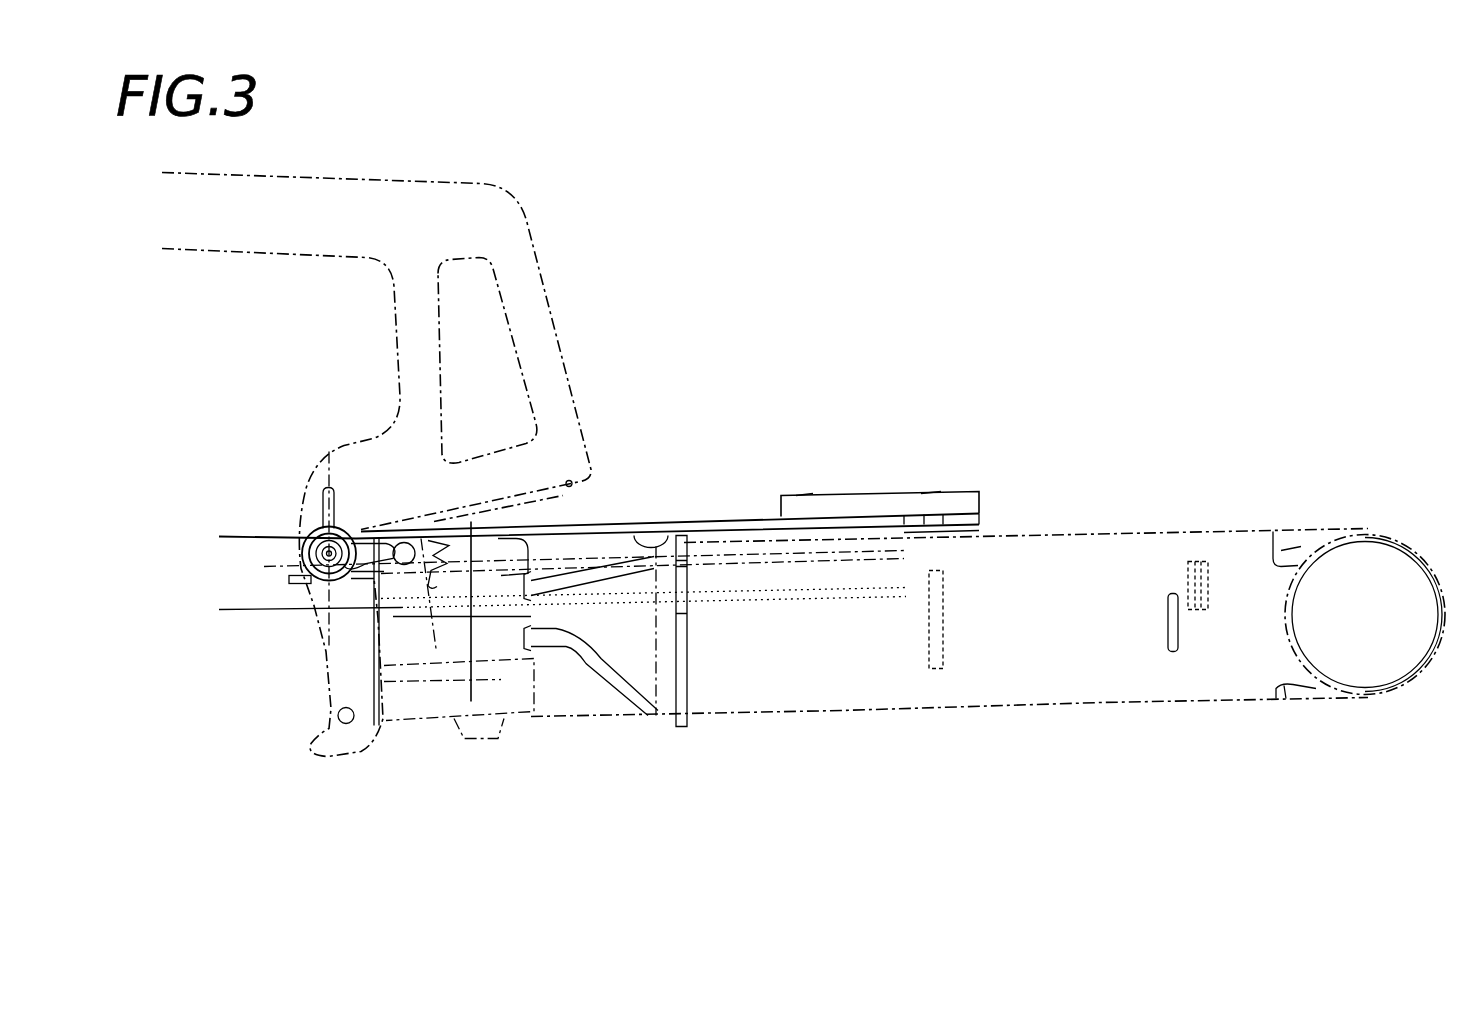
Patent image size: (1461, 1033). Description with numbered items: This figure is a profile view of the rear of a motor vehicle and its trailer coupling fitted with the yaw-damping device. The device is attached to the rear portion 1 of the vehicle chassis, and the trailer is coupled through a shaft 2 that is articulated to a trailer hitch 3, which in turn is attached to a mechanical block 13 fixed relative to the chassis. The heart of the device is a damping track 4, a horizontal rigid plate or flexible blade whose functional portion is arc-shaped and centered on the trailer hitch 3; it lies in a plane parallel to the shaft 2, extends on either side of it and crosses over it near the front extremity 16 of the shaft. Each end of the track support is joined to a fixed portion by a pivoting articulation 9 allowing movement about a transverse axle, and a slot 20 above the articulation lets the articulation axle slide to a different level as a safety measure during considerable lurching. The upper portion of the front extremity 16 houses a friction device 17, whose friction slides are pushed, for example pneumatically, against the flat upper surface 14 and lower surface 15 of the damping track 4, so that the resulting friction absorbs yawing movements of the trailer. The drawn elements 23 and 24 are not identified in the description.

The rear portion 1 is at (567, 220).
The shaft 2 is at (1085, 714).
The trailer hitch 3 is at (507, 733).
The damping track 4 is at (730, 512).
The pivoting articulation 9 is at (348, 523).
The mechanical block 13 is at (543, 697).
The upper surface 14 is at (590, 522).
The lower surface 15 is at (657, 543).
The front extremity 16 is at (707, 732).
The friction device 17 is at (977, 487).
The slot 20 is at (318, 503).
The slide block 23 is at (862, 486).
The inner rod 24 is at (975, 548).